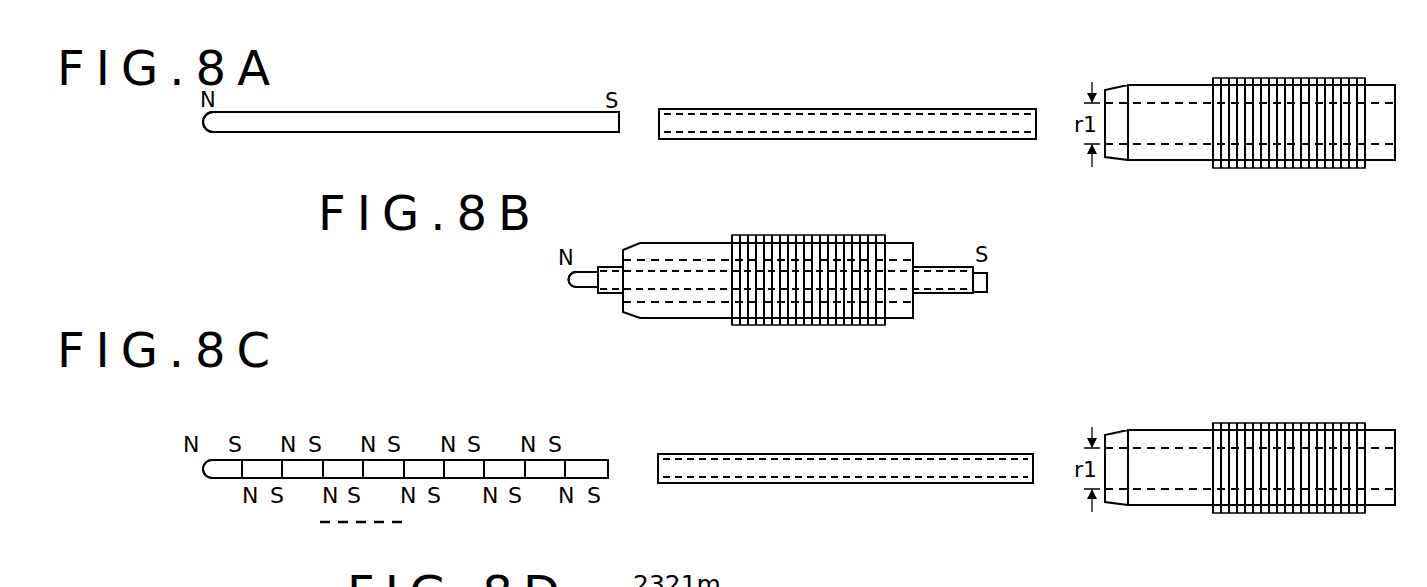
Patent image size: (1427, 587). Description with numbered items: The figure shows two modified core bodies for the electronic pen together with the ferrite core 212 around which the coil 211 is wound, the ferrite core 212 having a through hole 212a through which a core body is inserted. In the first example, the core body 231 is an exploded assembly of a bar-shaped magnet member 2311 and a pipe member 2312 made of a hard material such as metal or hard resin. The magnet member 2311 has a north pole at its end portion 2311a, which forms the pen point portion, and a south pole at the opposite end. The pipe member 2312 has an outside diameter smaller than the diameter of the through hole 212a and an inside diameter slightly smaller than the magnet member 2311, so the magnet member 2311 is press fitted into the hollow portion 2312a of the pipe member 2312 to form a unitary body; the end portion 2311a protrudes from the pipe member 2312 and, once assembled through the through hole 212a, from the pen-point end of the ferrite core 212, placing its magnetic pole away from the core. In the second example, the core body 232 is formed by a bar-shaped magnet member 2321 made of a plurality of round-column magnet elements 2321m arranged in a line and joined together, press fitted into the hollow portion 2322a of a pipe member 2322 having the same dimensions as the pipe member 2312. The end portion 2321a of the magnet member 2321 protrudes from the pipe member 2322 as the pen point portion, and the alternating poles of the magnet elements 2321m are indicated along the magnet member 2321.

In FIG. 8A, the coil 211 is at (1283, 165).
In FIG. 8B, the coil 211 is at (822, 327).
In FIG. 8C, the coil 211 is at (1273, 512).
In FIG. 8A, the ferrite core 212 is at (1243, 158).
In FIG. 8B, the ferrite core 212 is at (768, 308).
In FIG. 8C, the ferrite core 212 is at (1237, 503).
In FIG. 8A, the through hole 212a is at (1200, 153).
In FIG. 8B, the through hole 212a is at (673, 302).
In FIG. 8C, the through hole 212a is at (1190, 495).
In FIG. 8A, the core body 231 is at (597, 171).
In FIG. 8B, the core body 231 is at (722, 321).
In FIG. 8A, the bar-shaped magnet member 2311 is at (391, 148).
In FIG. 8B, the bar-shaped magnet member 2311 is at (527, 295).
In FIG. 8A, the end portion 2311a is at (206, 119).
In FIG. 8B, the end portion 2311a is at (569, 279).
In FIG. 8A, the pipe member 2312 is at (836, 147).
In FIG. 8B, the pipe member 2312 is at (610, 295).
In FIG. 8A, the hollow portion 2312a is at (842, 123).
In FIG. 8C, the core body 232 is at (618, 478).
In FIG. 8C, the bar-shaped magnet member 2321 is at (455, 472).
In FIG. 8C, the end portion 2321a is at (213, 465).
In FIG. 8C, the magnet elements 2321m is at (587, 479).
In FIG. 8C, the pipe member 2322 is at (845, 493).
In FIG. 8C, the hollow portion 2322a is at (845, 496).